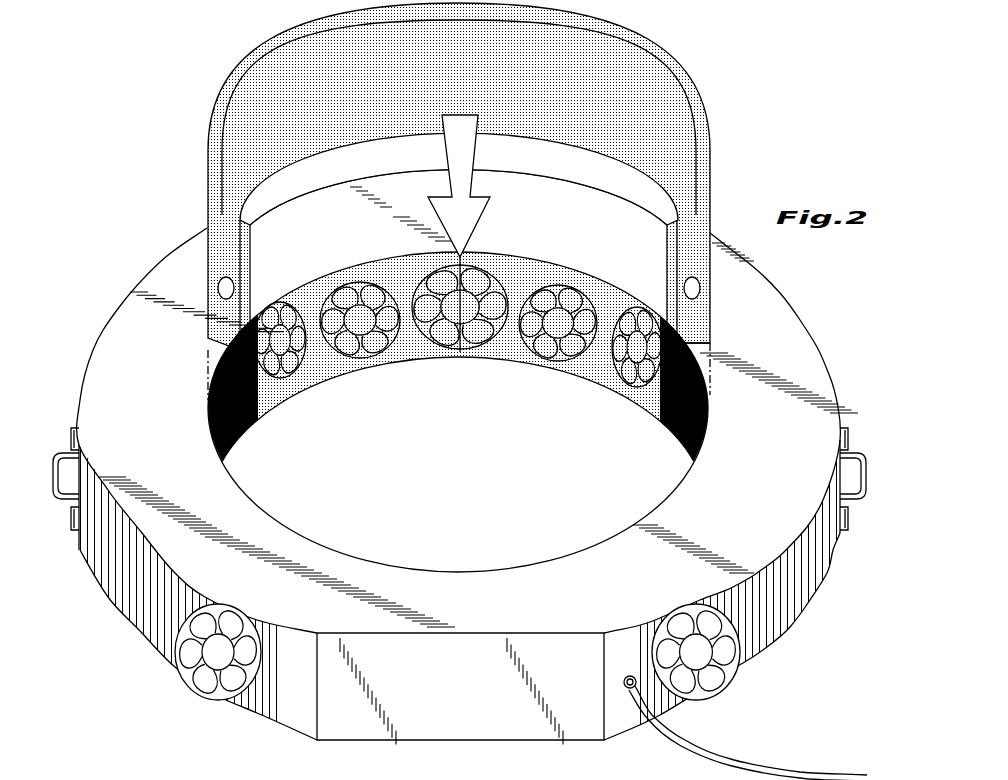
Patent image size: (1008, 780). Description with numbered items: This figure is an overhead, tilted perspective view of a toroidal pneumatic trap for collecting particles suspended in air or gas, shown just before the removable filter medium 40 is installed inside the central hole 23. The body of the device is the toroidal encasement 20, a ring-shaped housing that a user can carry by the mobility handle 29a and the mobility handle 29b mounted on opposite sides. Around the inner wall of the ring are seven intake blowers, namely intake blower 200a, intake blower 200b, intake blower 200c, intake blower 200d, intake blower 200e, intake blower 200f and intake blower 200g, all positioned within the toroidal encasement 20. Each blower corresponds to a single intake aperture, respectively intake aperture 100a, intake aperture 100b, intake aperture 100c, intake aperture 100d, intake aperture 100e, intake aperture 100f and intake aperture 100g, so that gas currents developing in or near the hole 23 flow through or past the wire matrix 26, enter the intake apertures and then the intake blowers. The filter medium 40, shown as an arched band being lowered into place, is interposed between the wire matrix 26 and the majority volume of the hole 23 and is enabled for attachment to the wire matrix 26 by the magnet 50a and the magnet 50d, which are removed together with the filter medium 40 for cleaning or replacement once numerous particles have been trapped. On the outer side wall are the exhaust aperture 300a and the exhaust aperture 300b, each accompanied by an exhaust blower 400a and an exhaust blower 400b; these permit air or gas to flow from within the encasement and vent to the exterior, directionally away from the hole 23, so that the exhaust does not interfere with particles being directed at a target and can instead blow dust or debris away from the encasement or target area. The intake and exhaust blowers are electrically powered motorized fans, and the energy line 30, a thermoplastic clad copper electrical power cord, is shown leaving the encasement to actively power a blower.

The toroidal encasement 20 is at (113, 323).
The hole 23 is at (470, 540).
The wire matrix 26 is at (690, 343).
The mobility handle 29a is at (53, 470).
The mobility handle 29b is at (866, 470).
The energy line 30 is at (852, 777).
The filter medium 40 is at (250, 80).
The magnet 50a is at (220, 288).
The magnet 50d is at (700, 288).
The intake aperture 100a is at (258, 438).
The intake aperture 100b is at (293, 397).
The intake aperture 100c is at (383, 360).
The intake aperture 100d is at (458, 352).
The intake aperture 100e is at (573, 363).
The intake aperture 100f is at (647, 403).
The intake aperture 100g is at (680, 440).
The intake blower 200a is at (272, 428).
The intake blower 200b is at (340, 373).
The intake blower 200c is at (377, 358).
The intake blower 200d is at (452, 352).
The intake blower 200e is at (538, 368).
The intake blower 200f is at (617, 393).
The intake blower 200g is at (667, 427).
The exhaust aperture 300a is at (223, 703).
The exhaust aperture 300b is at (694, 700).
The exhaust blower 400a is at (217, 657).
The exhaust blower 400b is at (701, 657).